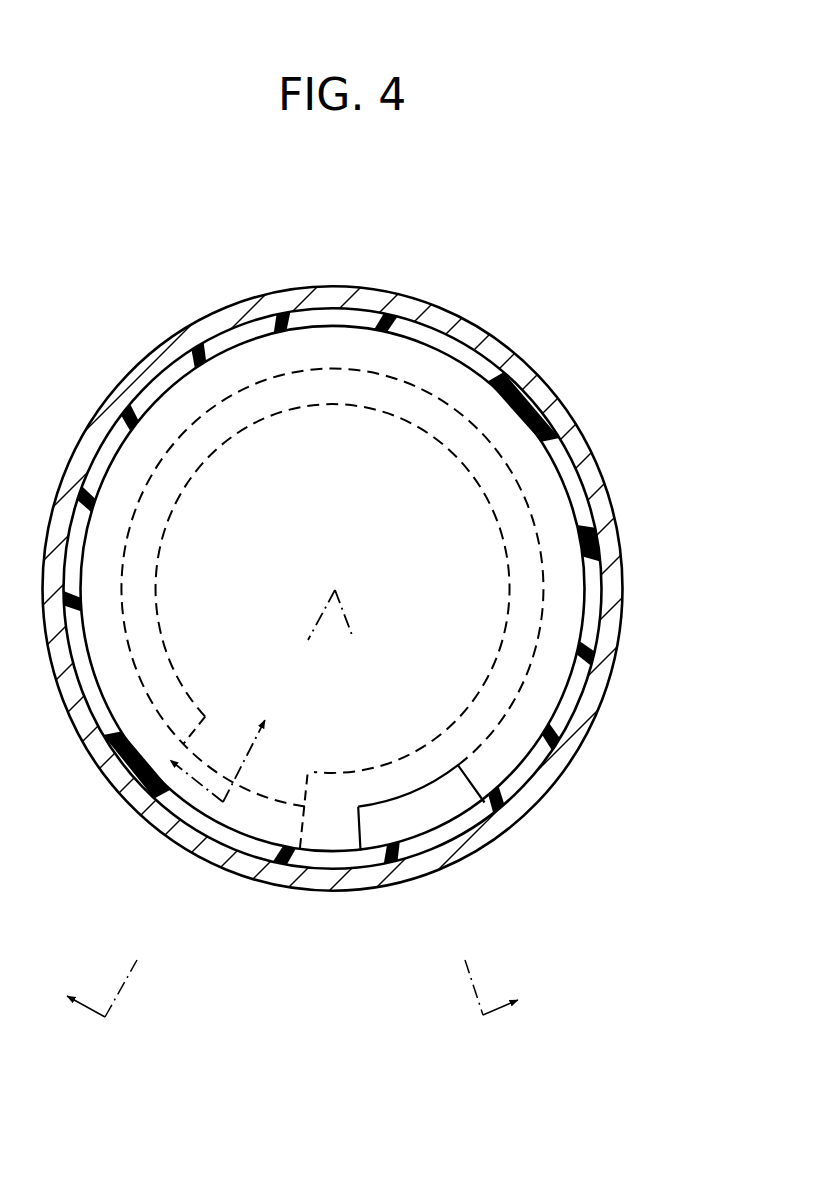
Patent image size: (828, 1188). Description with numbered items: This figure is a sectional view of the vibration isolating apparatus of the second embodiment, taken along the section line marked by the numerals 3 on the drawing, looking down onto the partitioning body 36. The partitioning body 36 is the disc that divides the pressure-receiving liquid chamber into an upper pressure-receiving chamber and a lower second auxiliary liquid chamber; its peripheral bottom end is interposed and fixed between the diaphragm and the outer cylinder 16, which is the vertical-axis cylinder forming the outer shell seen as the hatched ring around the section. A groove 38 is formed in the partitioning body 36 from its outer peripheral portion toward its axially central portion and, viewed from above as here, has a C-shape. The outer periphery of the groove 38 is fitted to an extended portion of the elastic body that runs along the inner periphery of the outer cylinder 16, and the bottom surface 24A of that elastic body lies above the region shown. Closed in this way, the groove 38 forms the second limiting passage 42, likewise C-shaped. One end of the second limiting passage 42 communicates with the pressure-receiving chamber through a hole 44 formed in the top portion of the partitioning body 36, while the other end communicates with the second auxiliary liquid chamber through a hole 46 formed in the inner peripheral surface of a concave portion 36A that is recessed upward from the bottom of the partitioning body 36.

The outer cylinder 16 is at (540, 367).
The bottom surface of the elastic body 24A is at (490, 379).
The partitioning body 36 is at (343, 843).
The concave portion 36A is at (237, 433).
The groove 38 is at (552, 545).
The second limiting passage 42 is at (555, 652).
The hole 44 is at (478, 786).
The hole 46 is at (306, 800).
The section line 3- 3 is at (293, 803).